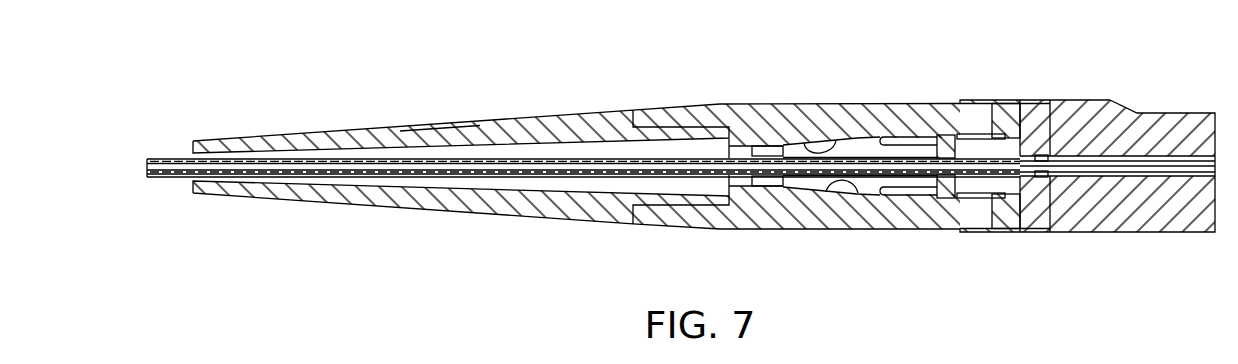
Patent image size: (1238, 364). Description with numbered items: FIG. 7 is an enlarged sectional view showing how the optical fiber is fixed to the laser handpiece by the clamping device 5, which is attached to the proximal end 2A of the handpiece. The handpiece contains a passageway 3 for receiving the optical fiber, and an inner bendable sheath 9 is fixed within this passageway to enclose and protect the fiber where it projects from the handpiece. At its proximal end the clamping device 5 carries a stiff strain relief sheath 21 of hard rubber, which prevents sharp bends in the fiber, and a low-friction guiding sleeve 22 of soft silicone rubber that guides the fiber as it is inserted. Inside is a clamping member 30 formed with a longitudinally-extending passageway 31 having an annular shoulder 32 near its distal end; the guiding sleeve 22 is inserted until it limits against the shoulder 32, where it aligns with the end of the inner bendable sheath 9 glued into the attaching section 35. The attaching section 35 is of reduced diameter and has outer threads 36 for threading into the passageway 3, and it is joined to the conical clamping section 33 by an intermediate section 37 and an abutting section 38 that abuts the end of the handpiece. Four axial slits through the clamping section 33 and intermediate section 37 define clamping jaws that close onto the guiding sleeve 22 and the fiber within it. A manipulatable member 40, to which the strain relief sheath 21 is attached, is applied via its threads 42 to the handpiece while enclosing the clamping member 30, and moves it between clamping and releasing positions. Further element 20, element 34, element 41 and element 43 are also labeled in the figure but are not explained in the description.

The proximal end of handpiece 2A is at (1076, 100).
The passageway 3 is at (1156, 178).
The clamping device 5 is at (696, 98).
The inner bendable sheath 9 is at (1151, 156).
The tapered strain relief sleeve 20 is at (569, 112).
The strain relief sheath 21 is at (443, 124).
The guiding sleeve 22 is at (458, 188).
The clamping member 30 is at (862, 142).
The longitudinally-extending passageway 31 is at (792, 175).
The shoulder 32 is at (917, 178).
The clamping section 33 is at (805, 186).
The spring contact 34 is at (842, 194).
The attaching section 35 is at (1046, 180).
The outer threads 36 is at (958, 135).
The intermediate section 37 is at (874, 196).
The abutting section 38 is at (950, 198).
The manipulatable member 40 is at (926, 103).
The upper contact sleeve 41 is at (907, 137).
The threads 42 is at (1004, 232).
The spring bump 43 is at (808, 144).